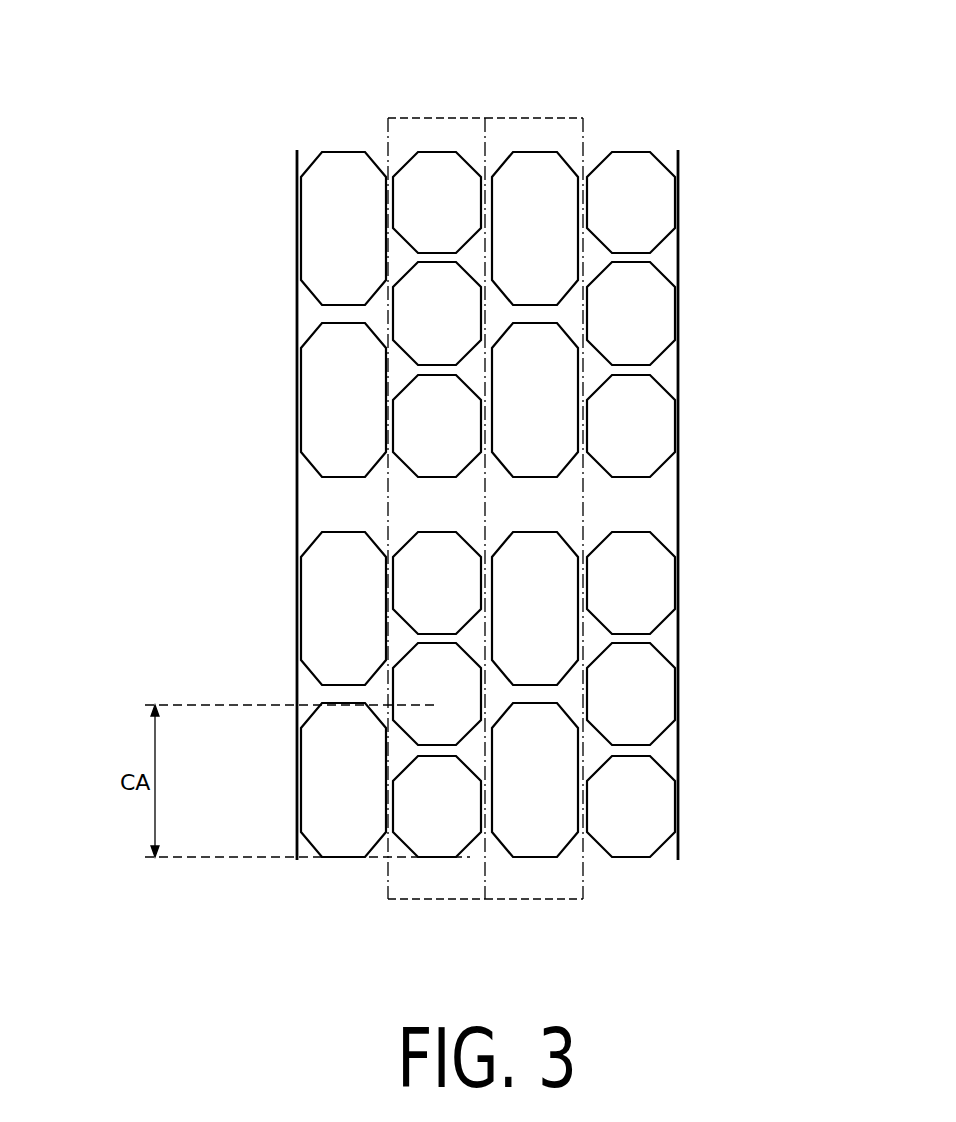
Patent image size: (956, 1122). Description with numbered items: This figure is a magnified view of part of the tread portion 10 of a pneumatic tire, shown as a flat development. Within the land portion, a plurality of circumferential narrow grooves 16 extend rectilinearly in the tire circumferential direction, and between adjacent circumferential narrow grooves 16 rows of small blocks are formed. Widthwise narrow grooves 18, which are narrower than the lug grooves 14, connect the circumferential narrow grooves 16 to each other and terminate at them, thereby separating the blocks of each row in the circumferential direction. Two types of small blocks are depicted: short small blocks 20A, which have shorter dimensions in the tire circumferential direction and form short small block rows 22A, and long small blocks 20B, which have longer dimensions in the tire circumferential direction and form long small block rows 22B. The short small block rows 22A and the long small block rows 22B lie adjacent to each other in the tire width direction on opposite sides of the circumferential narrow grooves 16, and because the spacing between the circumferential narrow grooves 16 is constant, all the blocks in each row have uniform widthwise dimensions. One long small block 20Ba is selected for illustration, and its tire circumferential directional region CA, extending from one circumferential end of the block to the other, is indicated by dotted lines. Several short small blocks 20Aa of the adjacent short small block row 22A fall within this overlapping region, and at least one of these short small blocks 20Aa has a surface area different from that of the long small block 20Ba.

The tread portion 10 is at (706, 166).
The lug groove 14 is at (638, 503).
The circumferential narrow groove 16 is at (487, 574).
The widthwise narrow groove 18 is at (535, 693).
The short small block 20A is at (437, 306).
The long small block 20B is at (540, 262).
The short small block in overlapping region 20Aa is at (457, 713).
The long small block of interest 20Ba is at (347, 797).
The short small block row 22A is at (432, 118).
The long small block row 22B is at (573, 118).